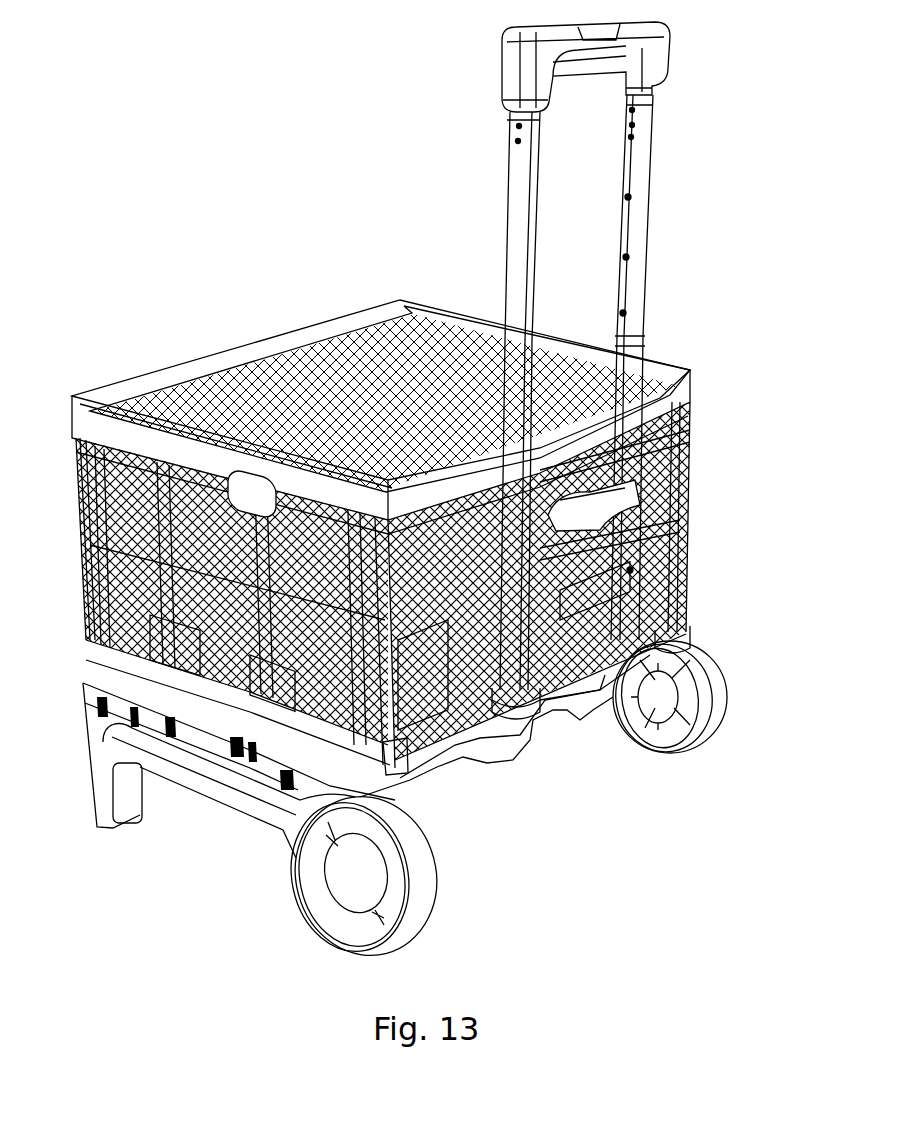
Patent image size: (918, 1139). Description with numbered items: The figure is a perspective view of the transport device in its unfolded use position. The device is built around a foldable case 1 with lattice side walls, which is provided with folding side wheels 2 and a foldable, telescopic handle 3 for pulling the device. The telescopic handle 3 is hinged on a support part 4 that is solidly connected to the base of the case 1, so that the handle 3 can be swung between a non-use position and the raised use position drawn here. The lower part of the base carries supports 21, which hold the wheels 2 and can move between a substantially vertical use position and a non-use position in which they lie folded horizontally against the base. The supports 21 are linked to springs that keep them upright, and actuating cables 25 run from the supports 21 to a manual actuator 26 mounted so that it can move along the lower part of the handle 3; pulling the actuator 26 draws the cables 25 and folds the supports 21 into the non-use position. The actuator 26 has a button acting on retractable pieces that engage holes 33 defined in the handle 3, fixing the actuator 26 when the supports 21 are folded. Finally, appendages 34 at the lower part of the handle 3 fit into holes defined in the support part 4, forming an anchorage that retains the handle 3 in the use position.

The foldable case 1 is at (190, 362).
The folding side wheels 2 is at (705, 690).
The telescopic handle 3 is at (660, 66).
The support part 4 is at (618, 674).
The supports 21 is at (230, 782).
The actuating cables 25 is at (640, 705).
The manual actuator 26 is at (655, 519).
The holes 33 is at (624, 313).
The appendages 34 is at (676, 638).